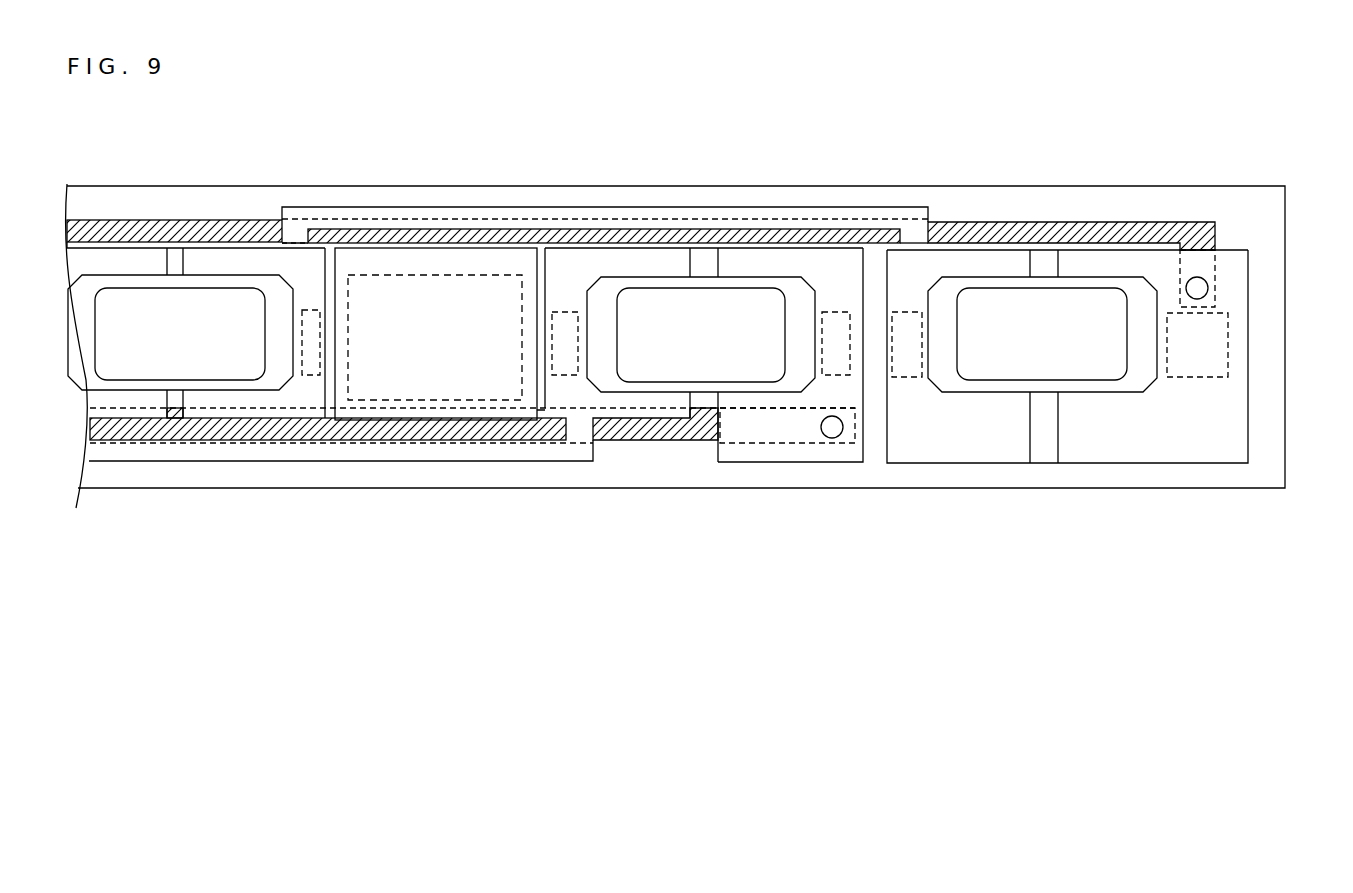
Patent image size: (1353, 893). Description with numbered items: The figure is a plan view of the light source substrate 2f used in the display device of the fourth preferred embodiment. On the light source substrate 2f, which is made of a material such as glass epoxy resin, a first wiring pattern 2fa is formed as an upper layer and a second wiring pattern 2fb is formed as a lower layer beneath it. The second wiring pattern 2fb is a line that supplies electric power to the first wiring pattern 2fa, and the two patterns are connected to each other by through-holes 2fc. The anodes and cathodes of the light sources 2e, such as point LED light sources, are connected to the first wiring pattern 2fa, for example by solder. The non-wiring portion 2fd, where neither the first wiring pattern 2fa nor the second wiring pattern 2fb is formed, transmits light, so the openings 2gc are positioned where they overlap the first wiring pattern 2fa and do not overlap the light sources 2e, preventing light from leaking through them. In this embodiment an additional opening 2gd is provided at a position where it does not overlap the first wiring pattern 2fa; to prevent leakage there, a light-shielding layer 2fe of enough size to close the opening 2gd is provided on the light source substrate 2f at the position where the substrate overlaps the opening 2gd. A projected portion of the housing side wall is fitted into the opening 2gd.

The light source substrate 2f is at (708, 187).
The first wiring pattern 2fa is at (1098, 440).
The second wiring pattern 2fb is at (973, 224).
The through-holes 2fc is at (832, 438).
The non-wiring portion 2fd is at (560, 477).
The light-shielding layer 2fe is at (427, 262).
The openings 2gc is at (311, 310).
The opening 2gd is at (509, 250).
The light sources 2e is at (1027, 337).